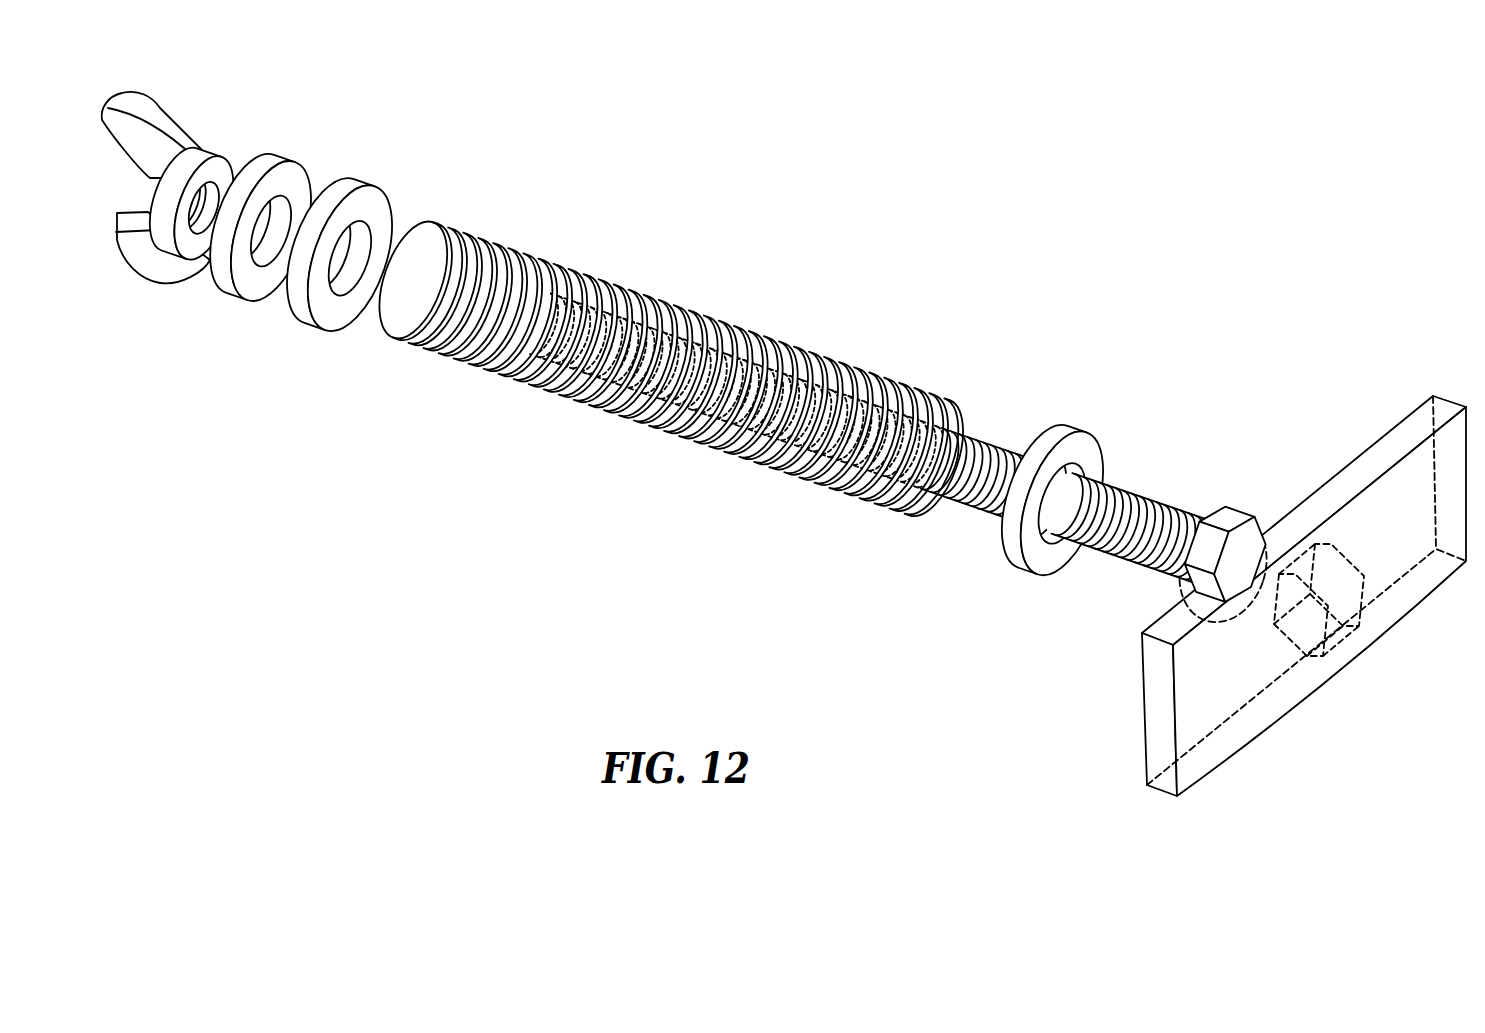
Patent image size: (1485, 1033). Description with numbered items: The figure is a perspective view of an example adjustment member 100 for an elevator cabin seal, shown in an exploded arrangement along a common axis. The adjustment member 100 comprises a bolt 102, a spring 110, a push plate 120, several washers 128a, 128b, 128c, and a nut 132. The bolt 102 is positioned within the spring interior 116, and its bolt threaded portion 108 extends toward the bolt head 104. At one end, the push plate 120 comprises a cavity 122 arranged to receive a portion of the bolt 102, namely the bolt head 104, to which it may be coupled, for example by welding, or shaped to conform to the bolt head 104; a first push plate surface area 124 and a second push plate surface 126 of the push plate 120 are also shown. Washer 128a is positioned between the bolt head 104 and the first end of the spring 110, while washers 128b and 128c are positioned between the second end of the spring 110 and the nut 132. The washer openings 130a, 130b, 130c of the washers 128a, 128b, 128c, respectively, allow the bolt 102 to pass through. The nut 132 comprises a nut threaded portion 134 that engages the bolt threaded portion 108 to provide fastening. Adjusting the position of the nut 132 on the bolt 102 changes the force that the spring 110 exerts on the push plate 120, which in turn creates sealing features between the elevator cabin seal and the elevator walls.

The adjustment member 100 is at (1195, 155).
The bolt 102 is at (1124, 495).
The bolt head 104 is at (1238, 504).
The bolt threaded portion 108 is at (965, 508).
The spring 110 is at (772, 340).
The spring interior 116 is at (415, 228).
The push plate 120 is at (1447, 396).
The cavity 122 is at (1319, 594).
The first push plate surface area 124 is at (1147, 744).
The second push plate surface 126 is at (1212, 755).
The washer 128a is at (1075, 427).
The washer 128b is at (368, 188).
The washer 128c is at (297, 160).
The washer opening 130a is at (1052, 542).
The washer opening 130b is at (345, 262).
The washer opening 130c is at (260, 245).
The nut 132 is at (162, 280).
The nut threaded portion 134 is at (213, 190).